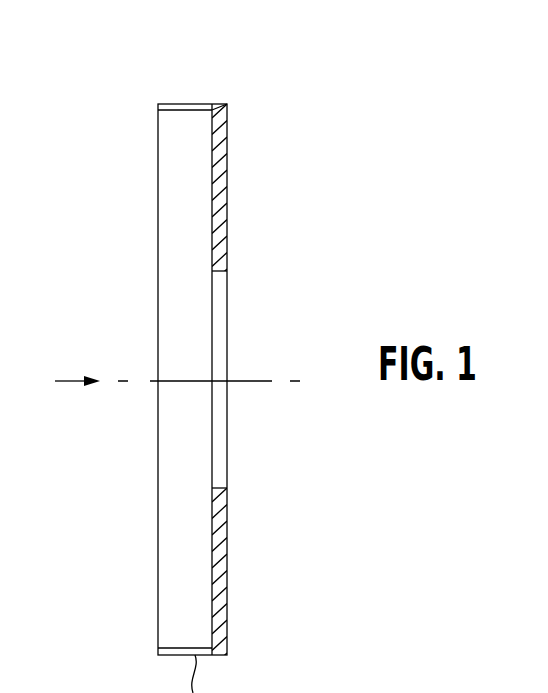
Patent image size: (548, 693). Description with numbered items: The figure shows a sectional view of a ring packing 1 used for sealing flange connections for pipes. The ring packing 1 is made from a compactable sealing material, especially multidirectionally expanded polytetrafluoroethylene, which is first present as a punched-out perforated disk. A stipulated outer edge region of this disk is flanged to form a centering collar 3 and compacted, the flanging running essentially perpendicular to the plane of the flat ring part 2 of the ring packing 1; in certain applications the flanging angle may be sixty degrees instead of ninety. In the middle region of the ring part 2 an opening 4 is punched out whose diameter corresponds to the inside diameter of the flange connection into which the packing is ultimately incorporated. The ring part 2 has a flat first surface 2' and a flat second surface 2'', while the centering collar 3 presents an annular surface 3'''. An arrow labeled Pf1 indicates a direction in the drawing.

The ring packing 1 is at (154, 78).
The ring part 2 is at (270, 193).
The first surface 2' is at (276, 106).
The second surface 2'' is at (159, 140).
The centering collar 3 is at (207, 65).
The annular surface of centering collar 3''' is at (185, 638).
The opening 4 is at (220, 320).
The filtrate pressure / flow direction Pf1 is at (66, 381).